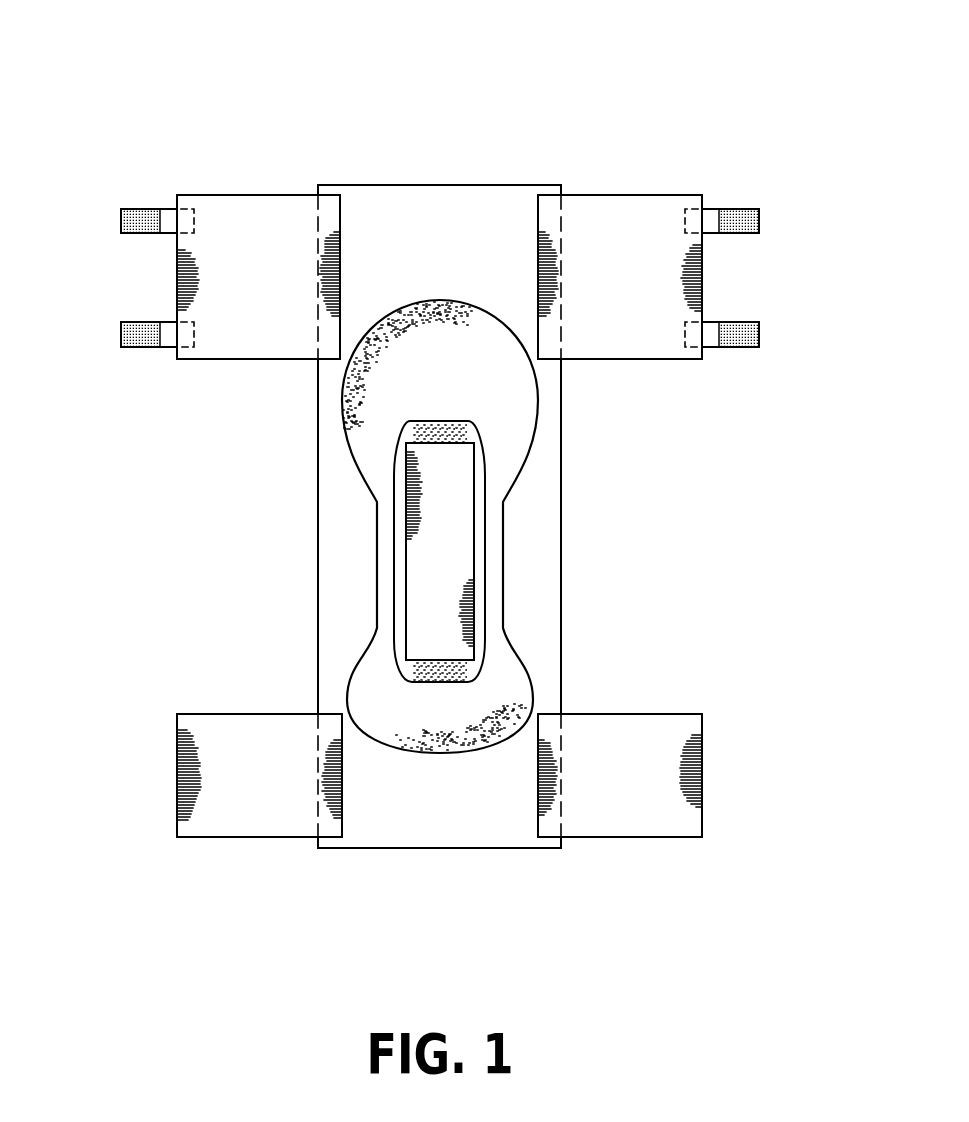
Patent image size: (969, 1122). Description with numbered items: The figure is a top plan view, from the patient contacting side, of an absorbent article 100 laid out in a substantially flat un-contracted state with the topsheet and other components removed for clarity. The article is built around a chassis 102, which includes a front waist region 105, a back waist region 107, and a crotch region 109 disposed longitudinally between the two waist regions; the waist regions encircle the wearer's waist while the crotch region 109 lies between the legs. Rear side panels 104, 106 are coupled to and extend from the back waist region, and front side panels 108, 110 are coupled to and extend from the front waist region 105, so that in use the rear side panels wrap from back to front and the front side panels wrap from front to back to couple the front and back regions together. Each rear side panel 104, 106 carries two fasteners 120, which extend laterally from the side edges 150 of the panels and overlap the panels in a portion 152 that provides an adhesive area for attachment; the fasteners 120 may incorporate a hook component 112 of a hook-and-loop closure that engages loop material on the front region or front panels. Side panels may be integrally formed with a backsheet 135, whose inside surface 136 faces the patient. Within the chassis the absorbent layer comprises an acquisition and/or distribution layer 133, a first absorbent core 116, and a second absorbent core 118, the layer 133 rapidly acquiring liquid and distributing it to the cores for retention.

The absorbent article 100 is at (180, 110).
The chassis 102 is at (562, 583).
The rear side panel 104 is at (611, 213).
The front waist region 105 is at (364, 822).
The rear side panel 106 is at (255, 207).
The back waist region 107 is at (397, 207).
The front side panel 108 is at (230, 822).
The crotch region 109 is at (318, 525).
The front side panel 110 is at (637, 825).
The hook component 112 is at (147, 214).
The first absorbent core 116 is at (492, 328).
The second absorbent core 118 is at (412, 428).
The fastener 120 is at (121, 221).
The acquisition and/or distribution layer 133 is at (455, 503).
The backsheet 135 is at (465, 850).
The inside surface 136 is at (520, 823).
The side edge 150 is at (177, 277).
The overlap portion 152 is at (190, 214).